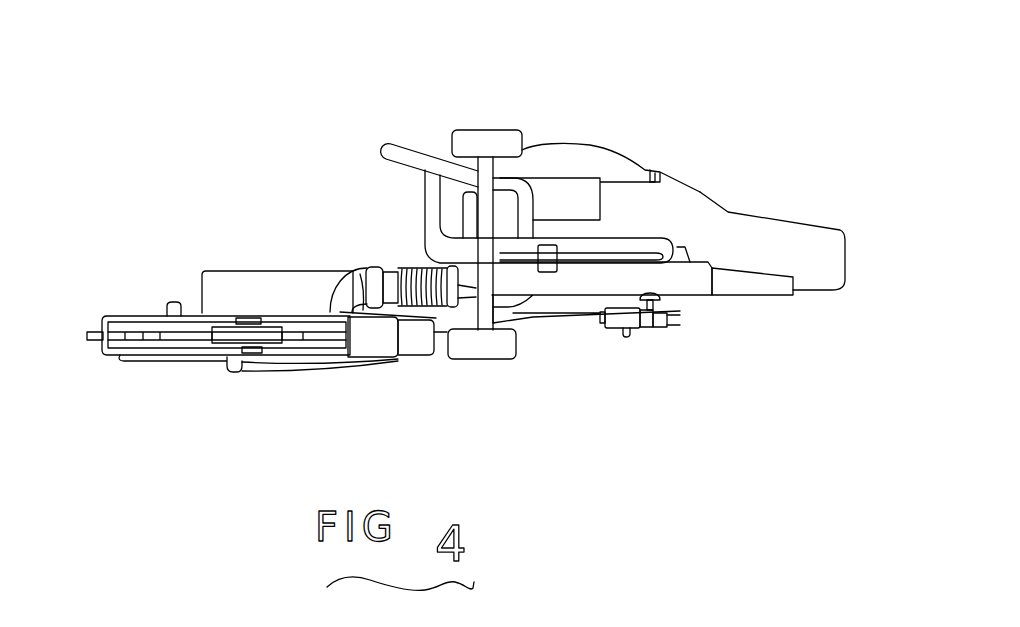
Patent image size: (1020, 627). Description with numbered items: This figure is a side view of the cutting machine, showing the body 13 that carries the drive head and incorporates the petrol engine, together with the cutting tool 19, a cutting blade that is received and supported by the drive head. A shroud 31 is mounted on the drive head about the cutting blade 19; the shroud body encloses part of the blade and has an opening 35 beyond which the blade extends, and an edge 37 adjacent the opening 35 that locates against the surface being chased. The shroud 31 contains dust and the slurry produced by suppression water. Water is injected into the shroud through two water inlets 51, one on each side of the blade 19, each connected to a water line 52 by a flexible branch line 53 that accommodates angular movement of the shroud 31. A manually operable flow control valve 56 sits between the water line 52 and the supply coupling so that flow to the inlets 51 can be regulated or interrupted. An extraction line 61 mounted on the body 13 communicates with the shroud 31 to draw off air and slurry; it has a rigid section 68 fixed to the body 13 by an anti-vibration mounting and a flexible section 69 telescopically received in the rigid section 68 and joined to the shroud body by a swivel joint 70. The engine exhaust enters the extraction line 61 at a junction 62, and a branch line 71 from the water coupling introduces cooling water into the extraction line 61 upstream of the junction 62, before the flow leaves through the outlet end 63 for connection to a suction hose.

The body 13 is at (578, 157).
The cutting tool 19 is at (125, 323).
The shroud 31 is at (108, 353).
The opening 35 is at (133, 345).
The edge 37 is at (142, 316).
The water inlet 51 is at (226, 362).
The water line 52 is at (537, 322).
The branch line 53 is at (270, 372).
The flow control valve 56 is at (632, 327).
The extraction line 61 is at (569, 280).
The junction 62 is at (675, 260).
The outlet end 63 is at (757, 280).
The rigid section 68 is at (467, 290).
The flexible section 69 is at (413, 268).
The swivel joint 70 is at (358, 288).
The branch line 71 is at (660, 302).